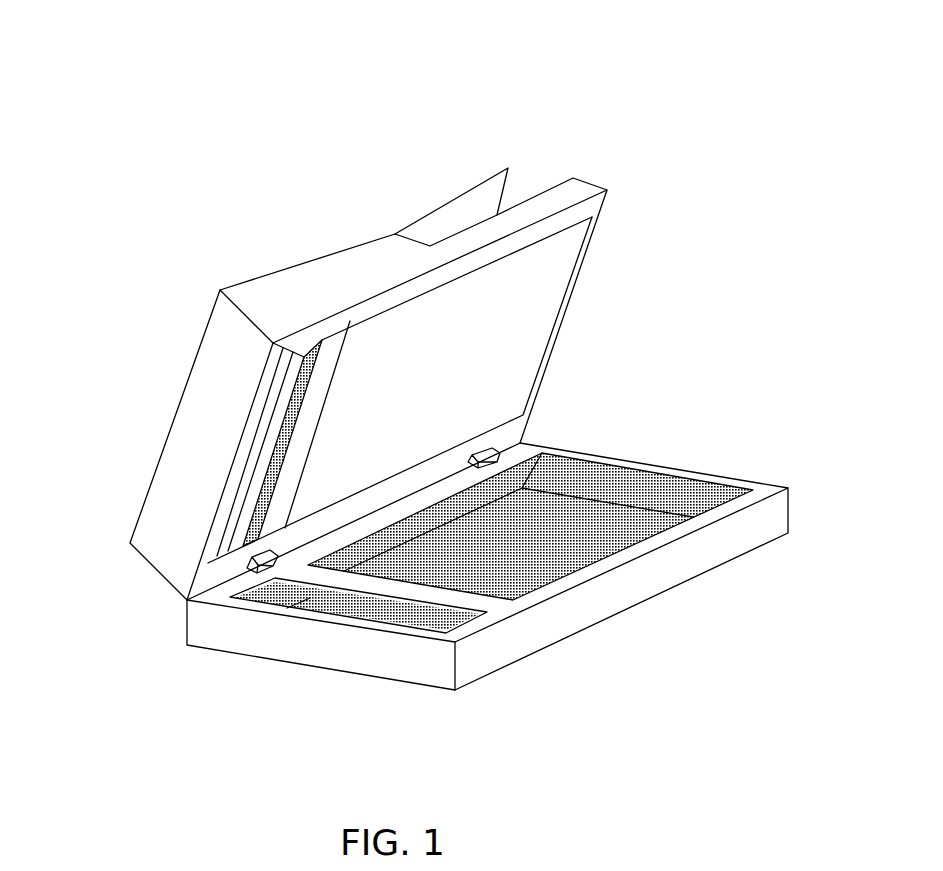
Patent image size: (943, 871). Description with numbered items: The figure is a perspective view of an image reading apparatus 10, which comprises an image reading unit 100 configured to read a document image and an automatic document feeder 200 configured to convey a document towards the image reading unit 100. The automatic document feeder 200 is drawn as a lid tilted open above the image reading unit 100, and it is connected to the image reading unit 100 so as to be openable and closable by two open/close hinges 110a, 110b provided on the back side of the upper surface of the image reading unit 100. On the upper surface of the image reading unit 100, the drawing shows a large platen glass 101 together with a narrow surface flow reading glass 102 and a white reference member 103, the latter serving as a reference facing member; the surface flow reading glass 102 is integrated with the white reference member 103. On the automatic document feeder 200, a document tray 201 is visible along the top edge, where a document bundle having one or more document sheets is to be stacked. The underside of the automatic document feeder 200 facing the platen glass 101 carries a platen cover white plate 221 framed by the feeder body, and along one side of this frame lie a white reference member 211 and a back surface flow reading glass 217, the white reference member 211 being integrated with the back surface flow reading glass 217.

The image reading apparatus 10 is at (413, 110).
The image reading unit 100 is at (353, 672).
The platen glass 101 is at (653, 470).
The surface flow reading glass 102 is at (308, 598).
The white reference member 103 is at (485, 612).
The open/close hinge 110a is at (495, 450).
The open/close hinge 110b is at (250, 560).
The automatic document feeder 200 is at (253, 275).
The document tray 201 is at (480, 180).
The white reference member 211 is at (243, 502).
The back surface flow reading glass 217 is at (310, 372).
The platen cover white plate 221 is at (532, 336).